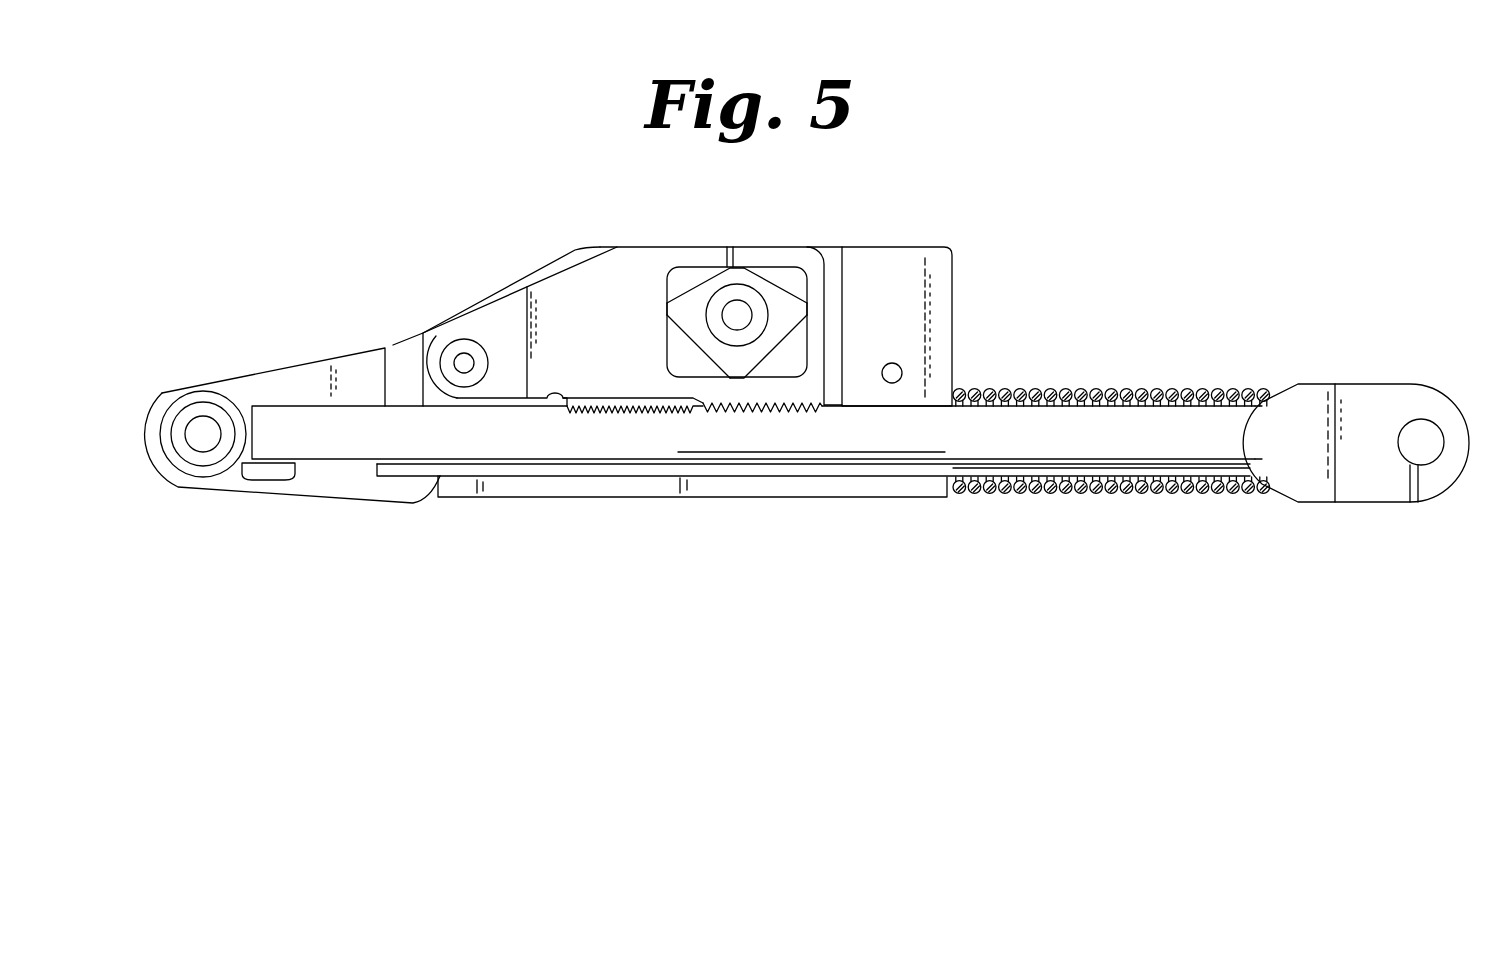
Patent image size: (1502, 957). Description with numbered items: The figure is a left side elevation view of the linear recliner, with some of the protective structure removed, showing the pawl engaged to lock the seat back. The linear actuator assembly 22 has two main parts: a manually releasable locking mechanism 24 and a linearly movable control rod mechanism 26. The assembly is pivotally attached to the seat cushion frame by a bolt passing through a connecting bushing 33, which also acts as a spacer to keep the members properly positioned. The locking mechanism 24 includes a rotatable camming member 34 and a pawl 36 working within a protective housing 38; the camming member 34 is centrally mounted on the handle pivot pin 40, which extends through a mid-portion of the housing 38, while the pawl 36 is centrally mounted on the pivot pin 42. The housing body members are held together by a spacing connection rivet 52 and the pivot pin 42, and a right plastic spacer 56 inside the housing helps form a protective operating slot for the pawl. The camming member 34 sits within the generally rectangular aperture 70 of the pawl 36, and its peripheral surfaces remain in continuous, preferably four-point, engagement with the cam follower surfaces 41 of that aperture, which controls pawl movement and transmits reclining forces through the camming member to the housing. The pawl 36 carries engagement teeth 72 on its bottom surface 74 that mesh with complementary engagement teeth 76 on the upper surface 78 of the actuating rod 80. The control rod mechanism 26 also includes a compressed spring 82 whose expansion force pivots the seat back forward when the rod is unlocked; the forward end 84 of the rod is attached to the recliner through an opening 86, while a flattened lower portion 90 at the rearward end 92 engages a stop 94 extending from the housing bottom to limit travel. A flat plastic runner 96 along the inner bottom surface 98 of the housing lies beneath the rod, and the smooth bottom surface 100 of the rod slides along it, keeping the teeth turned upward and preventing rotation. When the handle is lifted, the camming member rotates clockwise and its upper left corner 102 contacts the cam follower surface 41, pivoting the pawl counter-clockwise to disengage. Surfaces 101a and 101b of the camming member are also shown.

The linear actuator assembly 22 is at (926, 199).
The locking mechanism 24 is at (513, 242).
The control rod mechanism 26 is at (1152, 527).
The connecting bushing 33 is at (180, 478).
The camming member 34 is at (793, 300).
The pawl 36 is at (630, 263).
The protective housing 38 is at (975, 268).
The handle pivot pin 40 is at (740, 310).
The cam follower surfaces 41 is at (690, 273).
The pivot pin 42 is at (461, 362).
The spacing connection rivet 52 is at (902, 373).
The right plastic spacer 56 is at (678, 345).
The aperture 70 is at (677, 367).
The engagement teeth 72 is at (787, 413).
The bottom surface 74 is at (678, 400).
The engagement teeth 76 is at (608, 408).
The upper surface 78 is at (552, 400).
The actuating rod 80 is at (1117, 433).
The compressed spring 82 is at (1037, 388).
The forward end 84 is at (1465, 410).
The opening 86 is at (1430, 453).
The flattened lower portion 90 is at (270, 480).
The rearward end 92 is at (307, 414).
The stop 94 is at (433, 490).
The flat plastic runner 96 is at (860, 470).
The inner bottom surface 98 is at (895, 478).
The smooth bottom surface 100 is at (740, 458).
The cam face 101a is at (670, 297).
The cam face 101b is at (807, 310).
The upper left corner 102 is at (698, 285).